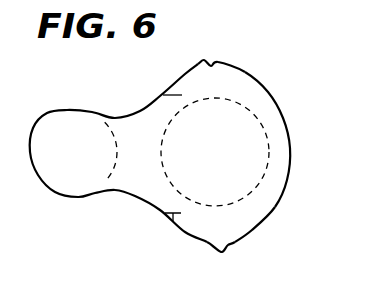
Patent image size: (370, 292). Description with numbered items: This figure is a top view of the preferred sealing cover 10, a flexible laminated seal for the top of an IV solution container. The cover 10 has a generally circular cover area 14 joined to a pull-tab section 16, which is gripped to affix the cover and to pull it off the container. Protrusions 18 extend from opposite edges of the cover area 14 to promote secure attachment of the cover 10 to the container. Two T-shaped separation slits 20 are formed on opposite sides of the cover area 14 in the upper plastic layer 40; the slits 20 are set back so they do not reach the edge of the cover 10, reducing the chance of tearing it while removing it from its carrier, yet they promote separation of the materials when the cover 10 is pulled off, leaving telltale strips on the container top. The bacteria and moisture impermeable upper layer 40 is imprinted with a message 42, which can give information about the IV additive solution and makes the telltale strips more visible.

The sealing cover 10 is at (172, 150).
The cover area 14 is at (208, 274).
The pull-tab section 16 is at (85, 233).
The protrusions 18 is at (205, 61).
The separation slits 20 is at (171, 91).
The upper layer 40 is at (291, 150).
The message 42 is at (268, 117).